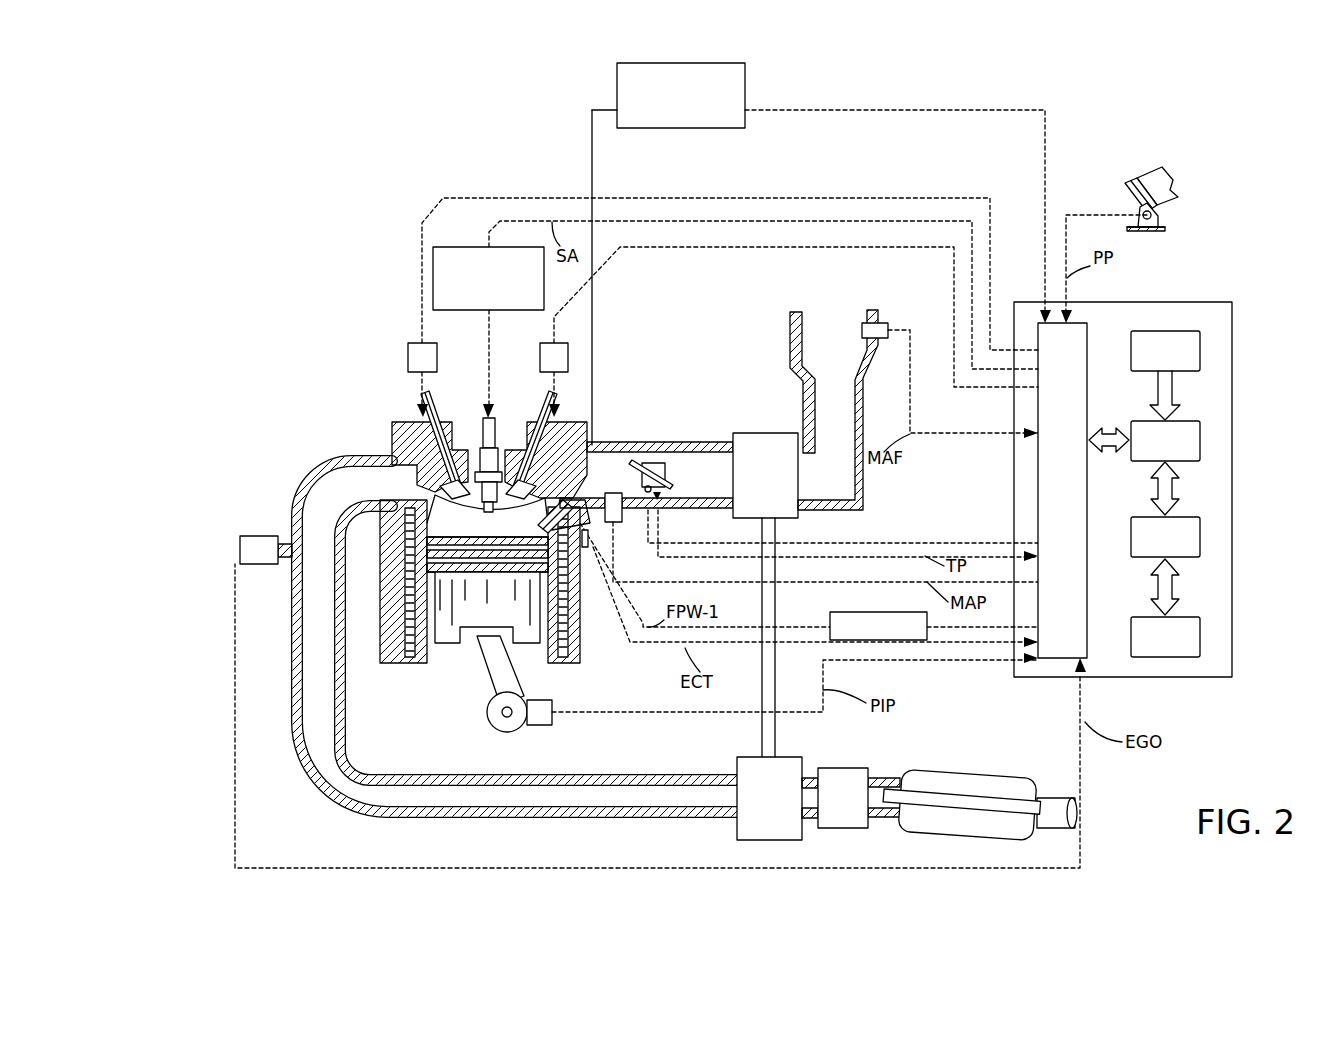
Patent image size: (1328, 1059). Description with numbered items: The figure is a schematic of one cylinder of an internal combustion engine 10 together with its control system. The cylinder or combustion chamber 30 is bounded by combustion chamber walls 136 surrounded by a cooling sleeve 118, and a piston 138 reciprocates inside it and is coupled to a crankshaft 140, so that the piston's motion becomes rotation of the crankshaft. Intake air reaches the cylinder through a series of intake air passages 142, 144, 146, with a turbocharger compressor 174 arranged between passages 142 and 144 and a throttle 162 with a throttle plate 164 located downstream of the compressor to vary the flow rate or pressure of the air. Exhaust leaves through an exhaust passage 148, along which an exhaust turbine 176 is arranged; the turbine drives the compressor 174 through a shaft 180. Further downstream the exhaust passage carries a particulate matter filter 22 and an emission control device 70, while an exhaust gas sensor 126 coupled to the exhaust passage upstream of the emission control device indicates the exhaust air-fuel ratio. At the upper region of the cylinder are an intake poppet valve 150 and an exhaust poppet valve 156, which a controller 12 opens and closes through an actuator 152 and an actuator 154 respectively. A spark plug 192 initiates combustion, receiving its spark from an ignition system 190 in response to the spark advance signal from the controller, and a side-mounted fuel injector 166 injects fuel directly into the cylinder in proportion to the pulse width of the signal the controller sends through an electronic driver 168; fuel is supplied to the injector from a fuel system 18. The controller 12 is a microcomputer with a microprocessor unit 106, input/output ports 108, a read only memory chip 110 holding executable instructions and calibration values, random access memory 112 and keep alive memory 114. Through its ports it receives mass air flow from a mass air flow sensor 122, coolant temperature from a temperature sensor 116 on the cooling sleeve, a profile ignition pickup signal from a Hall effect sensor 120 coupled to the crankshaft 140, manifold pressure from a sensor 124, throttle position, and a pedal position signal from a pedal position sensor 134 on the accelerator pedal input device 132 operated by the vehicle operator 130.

The internal combustion engine 10 is at (168, 146).
The controller 12 is at (1232, 302).
The fuel system 18 is at (745, 78).
The particulate matter filter 22 is at (845, 768).
The cylinder 30 is at (396, 538).
The emission control device 70 is at (1000, 770).
The microprocessor unit 106 is at (1200, 440).
The input/output ports 108 is at (1088, 330).
The read only memory chip 110 is at (1200, 350).
The random access memory 112 is at (1200, 540).
The keep alive memory 114 is at (1200, 640).
The temperature sensor 116 is at (590, 565).
The cooling sleeve 118 is at (586, 550).
The Hall effect sensor 120 is at (545, 726).
The mass air flow sensor 122 is at (880, 323).
The manifold pressure sensor 124 is at (625, 530).
The exhaust gas sensor 126 is at (240, 540).
The vehicle operator 130 is at (1178, 185).
The input device 132 is at (1130, 195).
The pedal position sensor 134 is at (1160, 217).
The combustion chamber walls 136 is at (418, 660).
The piston 138 is at (470, 640).
The crankshaft 140 is at (496, 728).
The intake air passage 142 is at (857, 355).
The intake air passage 144 is at (725, 482).
The intake air passage 146 is at (628, 482).
The exhaust passage 148 is at (384, 495).
The intake poppet valve 150 is at (530, 440).
The actuator 152 is at (542, 352).
The actuator 154 is at (410, 345).
The exhaust poppet valve 156 is at (390, 455).
The throttle 162 is at (660, 462).
The throttle plate 164 is at (633, 460).
The fuel injector 166 is at (564, 507).
The electronic driver 168 is at (832, 613).
The compressor 174 is at (752, 433).
The exhaust turbine 176 is at (737, 835).
The shaft 180 is at (777, 722).
The ignition system 190 is at (450, 247).
The spark plug 192 is at (480, 440).